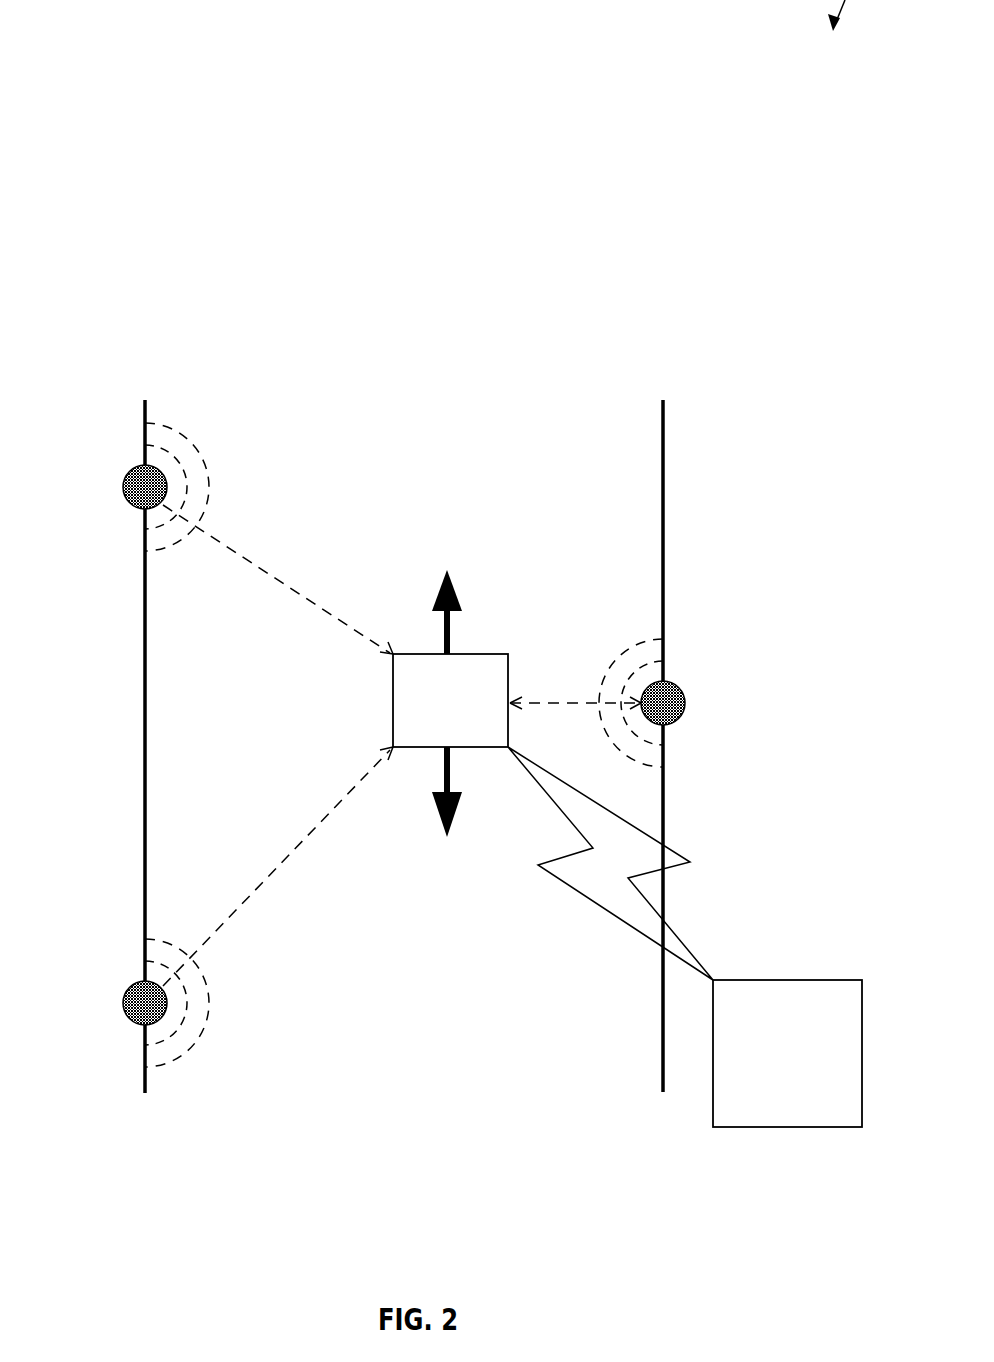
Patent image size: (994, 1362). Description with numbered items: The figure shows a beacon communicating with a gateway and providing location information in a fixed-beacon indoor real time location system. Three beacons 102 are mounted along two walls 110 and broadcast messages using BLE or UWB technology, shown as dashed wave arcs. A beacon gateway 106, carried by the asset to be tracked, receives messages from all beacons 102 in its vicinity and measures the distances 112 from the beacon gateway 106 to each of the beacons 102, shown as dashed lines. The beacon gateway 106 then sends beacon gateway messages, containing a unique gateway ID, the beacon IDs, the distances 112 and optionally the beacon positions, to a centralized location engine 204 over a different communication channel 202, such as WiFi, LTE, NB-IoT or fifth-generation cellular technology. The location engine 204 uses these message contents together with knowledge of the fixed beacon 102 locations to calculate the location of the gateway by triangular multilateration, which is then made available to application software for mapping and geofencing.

The wall 110 is at (145, 401).
The beacon 102 is at (126, 486).
The distance 112 is at (276, 590).
The beacon gateway 106 is at (450, 703).
The communication channel 202 is at (595, 1023).
The location engine 204 is at (811, 1084).